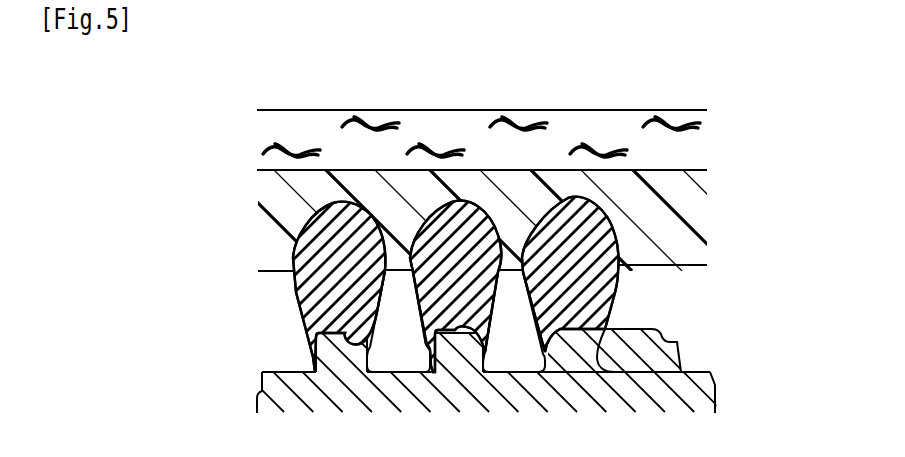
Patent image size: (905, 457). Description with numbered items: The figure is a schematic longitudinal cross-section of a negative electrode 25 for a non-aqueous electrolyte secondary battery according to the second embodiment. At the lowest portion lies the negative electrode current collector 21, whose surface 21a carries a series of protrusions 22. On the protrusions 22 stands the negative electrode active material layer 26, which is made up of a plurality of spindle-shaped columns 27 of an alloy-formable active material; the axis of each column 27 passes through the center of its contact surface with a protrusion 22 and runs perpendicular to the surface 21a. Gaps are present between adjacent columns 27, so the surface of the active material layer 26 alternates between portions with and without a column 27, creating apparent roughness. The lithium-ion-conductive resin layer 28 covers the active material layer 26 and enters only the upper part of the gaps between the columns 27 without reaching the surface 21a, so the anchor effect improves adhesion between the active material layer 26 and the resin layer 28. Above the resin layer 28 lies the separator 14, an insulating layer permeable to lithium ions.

The negative electrode 25 is at (246, 89).
The separator 14 is at (552, 128).
The resin layer 28 is at (627, 197).
The spindle-shaped columns 27 is at (373, 306).
The negative electrode active material layer 26 is at (280, 331).
The protrusion 22 is at (670, 341).
The surface of negative electrode current collector 21a is at (630, 372).
The negative electrode current collector 21 is at (673, 397).